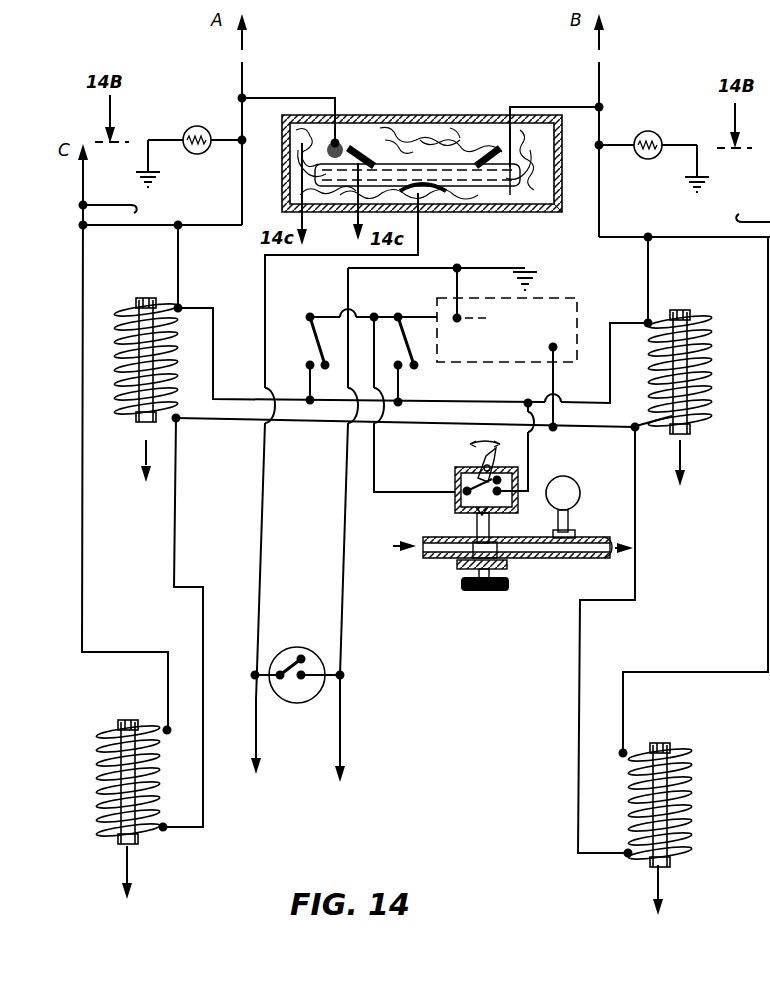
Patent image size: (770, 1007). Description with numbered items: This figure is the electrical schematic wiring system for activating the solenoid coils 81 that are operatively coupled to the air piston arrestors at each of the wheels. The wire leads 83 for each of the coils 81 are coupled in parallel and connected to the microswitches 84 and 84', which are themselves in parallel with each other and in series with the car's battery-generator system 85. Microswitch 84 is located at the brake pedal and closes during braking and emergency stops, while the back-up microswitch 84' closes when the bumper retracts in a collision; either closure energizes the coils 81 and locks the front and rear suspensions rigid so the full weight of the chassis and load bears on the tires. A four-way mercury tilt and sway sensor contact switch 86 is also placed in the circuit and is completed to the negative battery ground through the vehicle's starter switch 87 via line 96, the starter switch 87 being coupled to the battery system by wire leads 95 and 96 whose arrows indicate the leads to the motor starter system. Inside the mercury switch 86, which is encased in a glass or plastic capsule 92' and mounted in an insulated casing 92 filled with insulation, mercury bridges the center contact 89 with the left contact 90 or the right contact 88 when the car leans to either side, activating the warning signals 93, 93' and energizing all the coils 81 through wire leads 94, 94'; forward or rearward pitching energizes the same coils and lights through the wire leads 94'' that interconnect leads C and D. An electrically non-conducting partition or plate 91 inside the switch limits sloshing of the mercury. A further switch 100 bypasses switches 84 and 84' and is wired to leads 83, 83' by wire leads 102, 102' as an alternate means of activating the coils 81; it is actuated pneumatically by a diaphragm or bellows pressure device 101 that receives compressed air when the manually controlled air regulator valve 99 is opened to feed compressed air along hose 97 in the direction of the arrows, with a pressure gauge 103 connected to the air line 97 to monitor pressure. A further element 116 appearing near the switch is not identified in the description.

The solenoid coil 81 is at (134, 432).
The wire lead 83 is at (406, 479).
The wire lead 83' is at (408, 634).
The microswitch 84 is at (404, 360).
The back-up microswitch 84' is at (322, 356).
The battery-generator system 85 is at (568, 302).
The four-way mercury tilt and sway sensor contact switch 86 is at (408, 90).
The starter switch 87 is at (297, 703).
The right contact 88 is at (334, 142).
The center contact 89 is at (447, 188).
The left contact 90 is at (499, 155).
The electrically non-conducting partition or plate 91 is at (515, 212).
The insulated casing 92 is at (563, 229).
The glass or plastic capsule 92' is at (401, 129).
The warning signal 93 is at (189, 141).
The warning signal 93' is at (654, 147).
The wire lead 94 is at (289, 143).
The wire lead 94' is at (556, 149).
The wire lead 94'' is at (425, 210).
The wire lead 95 is at (255, 551).
The wire lead 96 is at (348, 574).
The compressed air hose 97 is at (593, 559).
The manually controlled air regulator valve 99 is at (530, 582).
The electrical switch 100 is at (458, 472).
The diaphragm or bellows pressure device 101 is at (469, 510).
The wire lead 102 is at (414, 422).
The wire lead 102' is at (527, 467).
The pressure gauge 103 is at (565, 476).
The switch arm 116 is at (502, 461).